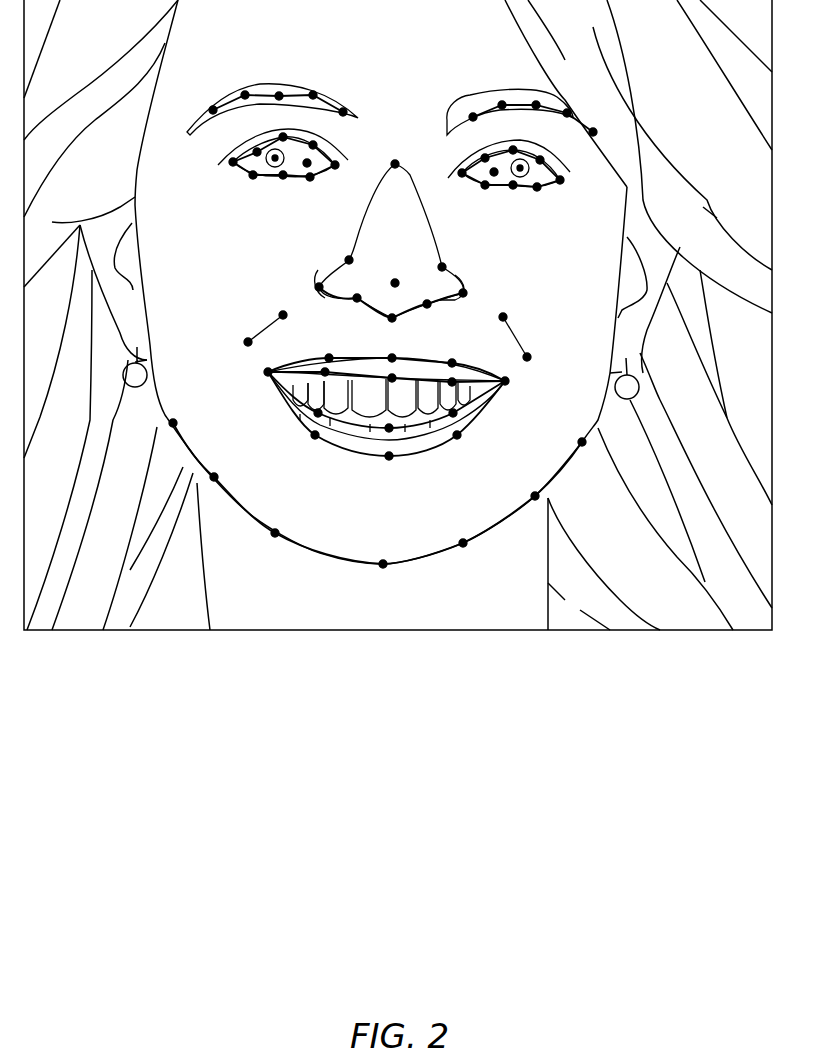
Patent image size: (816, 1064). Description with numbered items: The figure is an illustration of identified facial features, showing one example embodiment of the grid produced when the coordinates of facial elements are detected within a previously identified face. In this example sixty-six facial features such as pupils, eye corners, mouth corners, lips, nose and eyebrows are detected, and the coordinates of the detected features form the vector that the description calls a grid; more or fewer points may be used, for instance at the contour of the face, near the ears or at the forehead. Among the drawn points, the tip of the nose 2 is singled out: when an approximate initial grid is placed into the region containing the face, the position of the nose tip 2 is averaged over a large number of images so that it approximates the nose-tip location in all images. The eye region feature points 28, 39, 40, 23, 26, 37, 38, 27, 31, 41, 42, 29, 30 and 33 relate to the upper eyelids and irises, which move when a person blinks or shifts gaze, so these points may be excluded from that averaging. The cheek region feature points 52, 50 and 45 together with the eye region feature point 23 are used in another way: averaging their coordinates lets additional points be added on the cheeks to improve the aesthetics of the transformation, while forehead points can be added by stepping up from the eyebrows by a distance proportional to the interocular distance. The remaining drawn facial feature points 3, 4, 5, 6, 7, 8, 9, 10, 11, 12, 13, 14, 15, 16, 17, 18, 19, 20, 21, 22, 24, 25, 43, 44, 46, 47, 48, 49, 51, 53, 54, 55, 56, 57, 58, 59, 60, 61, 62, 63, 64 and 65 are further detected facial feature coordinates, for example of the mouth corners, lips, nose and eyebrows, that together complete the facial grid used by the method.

The tip of the nose 2 is at (396, 292).
The left mouth corner landmark 3 is at (272, 382).
The right mouth corner landmark 4 is at (507, 390).
The jaw contour landmark 5 is at (177, 432).
The jaw contour landmark 6 is at (584, 452).
The jaw contour landmark 7 is at (216, 486).
The jaw contour landmark 8 is at (538, 505).
The jaw contour landmark 9 is at (276, 542).
The jaw contour landmark 10 is at (470, 554).
The chin landmark 11 is at (390, 573).
The left eyebrow outer landmark 12 is at (218, 121).
The left eyebrow inner landmark 13 is at (350, 119).
The right eyebrow inner landmark 14 is at (476, 126).
The right eyebrow outer landmark 15 is at (599, 141).
The left eyebrow middle landmark 16 is at (286, 105).
The right eyebrow middle landmark 17 is at (542, 114).
The left eyebrow landmark 18 is at (251, 105).
The left eyebrow landmark 19 is at (320, 105).
The right eyebrow landmark 20 is at (508, 114).
The right eyebrow landmark 21 is at (573, 122).
The nose bridge landmark 22 is at (401, 174).
The eye region feature point 23 is at (238, 171).
The left eye inner corner landmark 24 is at (341, 175).
The right eye inner corner landmark 25 is at (466, 183).
The eye region feature point 26 is at (566, 188).
The eye region feature point 27 is at (289, 184).
The eye region feature point 28 is at (293, 145).
The eye region feature point 29 is at (261, 159).
The eye region feature point 30 is at (321, 158).
The eye region feature point 31 is at (512, 193).
The eye region feature point 33 is at (519, 158).
The eye region feature point 37 is at (260, 184).
The eye region feature point 38 is at (313, 185).
The eye region feature point 39 is at (492, 166).
The eye region feature point 40 is at (545, 167).
The eye region feature point 41 is at (488, 193).
The eye region feature point 42 is at (537, 195).
The nose left side landmark 43 is at (358, 269).
The nose right side landmark 44 is at (449, 275).
The cheek region feature point 45 is at (328, 295).
The right nostril outer landmark 46 is at (470, 302).
The nose base landmark 47 is at (365, 306).
The nose base landmark 48 is at (433, 312).
The nose base center landmark 49 is at (399, 327).
The cheek region feature point 50 is at (292, 324).
The right cheek landmark 51 is at (511, 326).
The cheek region feature point 52 is at (256, 351).
The right mouth region landmark 53 is at (532, 366).
The upper lip top center landmark 54 is at (400, 365).
The lower lip bottom center landmark 55 is at (395, 465).
The upper lip top landmark 56 is at (338, 365).
The upper lip top landmark 57 is at (461, 370).
The lower lip bottom landmark 58 is at (321, 444).
The lower lip bottom landmark 59 is at (463, 444).
The upper lip inner landmark 60 is at (333, 381).
The upper lip inner center landmark 61 is at (399, 387).
The upper lip inner landmark 62 is at (460, 390).
The lower lip inner landmark 63 is at (325, 422).
The lower lip inner center landmark 64 is at (395, 437).
The lower lip inner landmark 65 is at (460, 422).